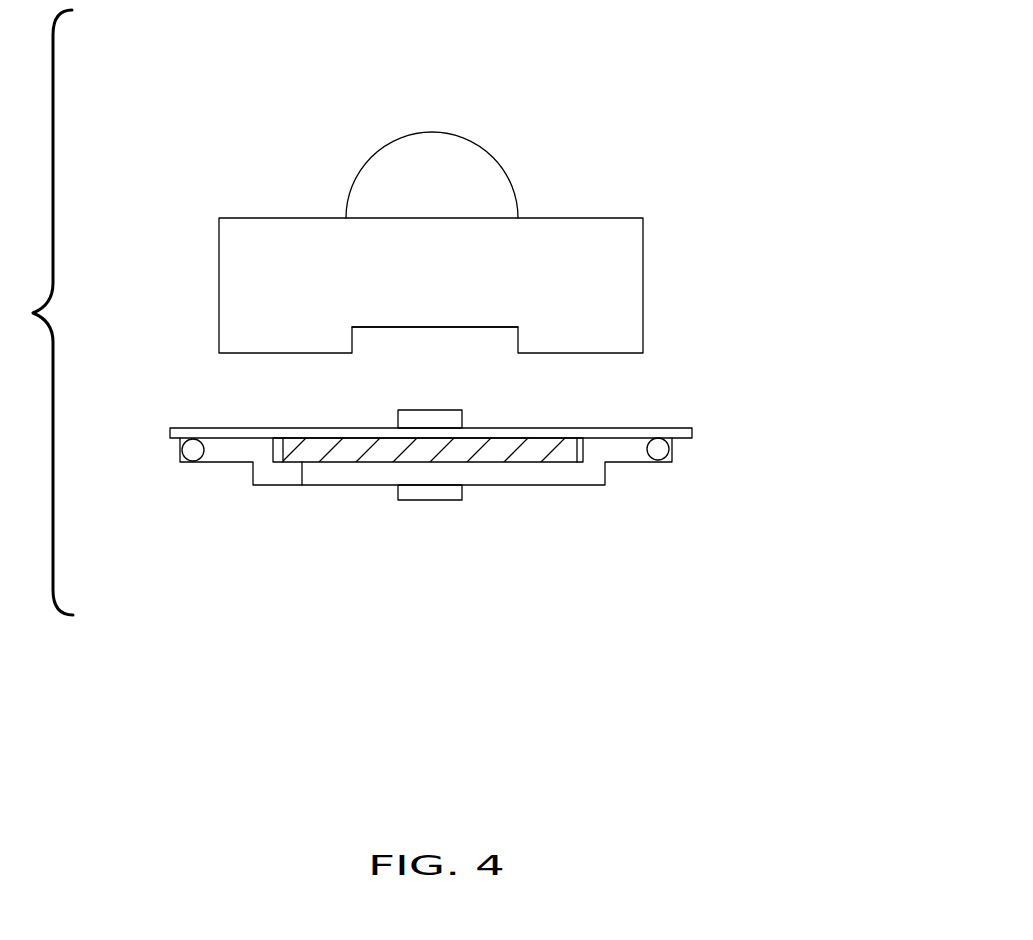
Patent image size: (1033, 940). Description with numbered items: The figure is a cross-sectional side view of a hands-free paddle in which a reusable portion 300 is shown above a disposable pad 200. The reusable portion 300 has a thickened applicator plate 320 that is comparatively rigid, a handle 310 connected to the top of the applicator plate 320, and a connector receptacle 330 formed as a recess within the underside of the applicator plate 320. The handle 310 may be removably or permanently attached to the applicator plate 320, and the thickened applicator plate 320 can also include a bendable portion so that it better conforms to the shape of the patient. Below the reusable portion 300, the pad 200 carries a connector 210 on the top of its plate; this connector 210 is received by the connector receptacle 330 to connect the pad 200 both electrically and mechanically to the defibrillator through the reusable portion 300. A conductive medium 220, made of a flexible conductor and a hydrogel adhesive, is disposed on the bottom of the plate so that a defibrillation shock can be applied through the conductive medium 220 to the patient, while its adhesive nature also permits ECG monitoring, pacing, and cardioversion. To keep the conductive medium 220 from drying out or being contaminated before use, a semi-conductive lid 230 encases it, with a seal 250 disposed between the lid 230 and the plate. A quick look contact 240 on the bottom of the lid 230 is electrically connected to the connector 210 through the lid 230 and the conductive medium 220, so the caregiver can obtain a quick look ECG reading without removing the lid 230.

The pad 200 is at (826, 472).
The connector 210 is at (398, 422).
The conductive medium 220 is at (302, 486).
The lid 230 is at (613, 463).
The quick look contact 240 is at (427, 501).
The seal 250 is at (193, 462).
The reusable portion 300 is at (629, 98).
The handle 310 is at (475, 138).
The applicator plate 320 is at (643, 270).
The connector receptacle 330 is at (398, 328).